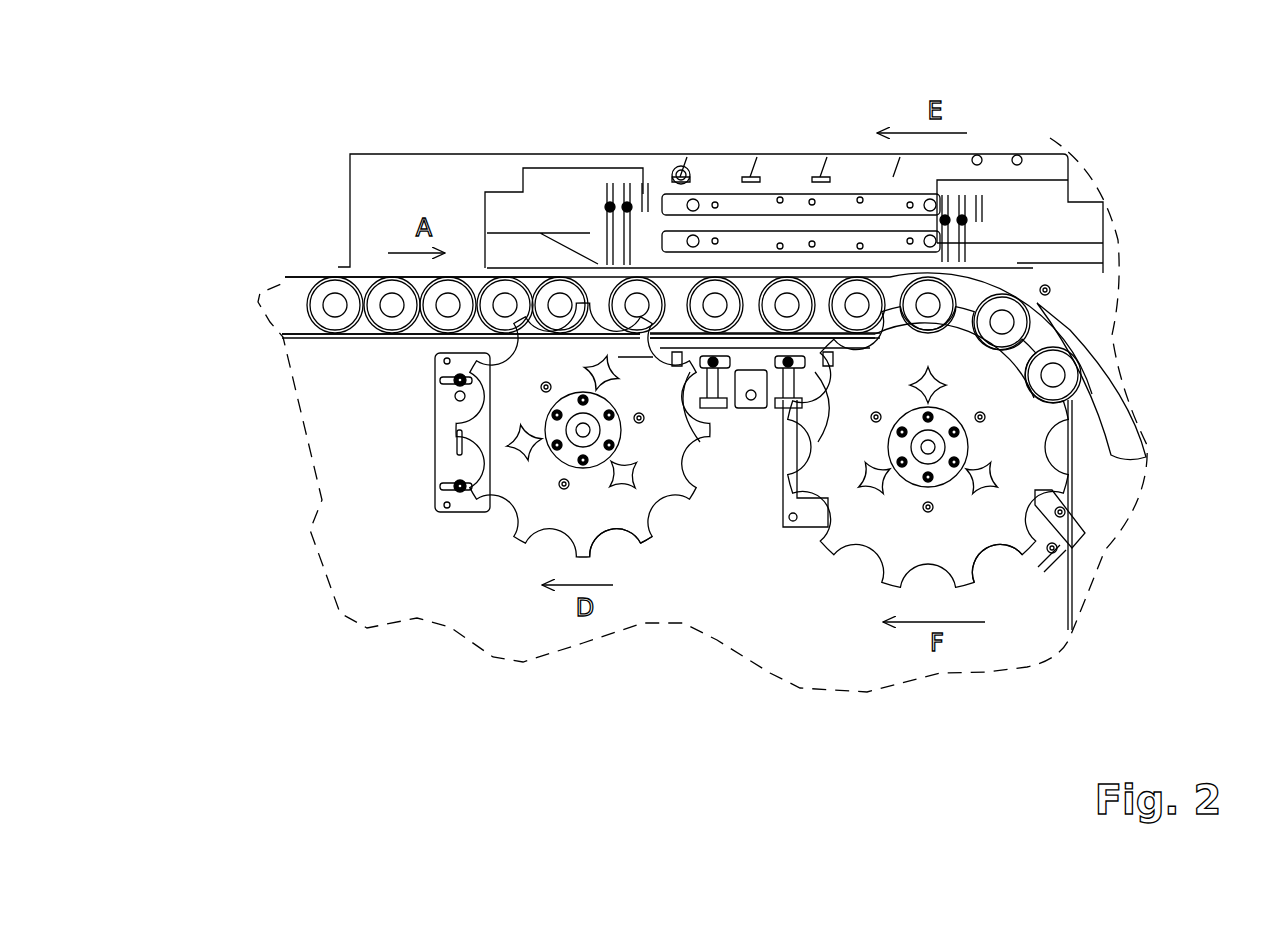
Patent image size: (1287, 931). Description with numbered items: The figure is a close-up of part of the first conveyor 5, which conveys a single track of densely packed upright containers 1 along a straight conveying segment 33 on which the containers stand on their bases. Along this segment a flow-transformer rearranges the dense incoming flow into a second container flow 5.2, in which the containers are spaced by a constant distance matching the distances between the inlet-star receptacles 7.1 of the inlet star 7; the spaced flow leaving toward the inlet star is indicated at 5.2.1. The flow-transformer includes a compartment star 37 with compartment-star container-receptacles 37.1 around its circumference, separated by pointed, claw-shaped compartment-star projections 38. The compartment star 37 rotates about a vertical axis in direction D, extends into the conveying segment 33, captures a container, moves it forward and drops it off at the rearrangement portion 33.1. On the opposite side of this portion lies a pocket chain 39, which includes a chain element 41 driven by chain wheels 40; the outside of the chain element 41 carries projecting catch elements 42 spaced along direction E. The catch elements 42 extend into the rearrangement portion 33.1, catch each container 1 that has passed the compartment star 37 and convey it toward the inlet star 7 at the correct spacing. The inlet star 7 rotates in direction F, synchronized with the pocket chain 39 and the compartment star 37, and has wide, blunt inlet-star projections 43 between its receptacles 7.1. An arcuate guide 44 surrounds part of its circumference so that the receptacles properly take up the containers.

The container 1 is at (333, 290).
The first conveyor 5 is at (413, 113).
The second container flow 5.2 is at (1060, 328).
The chain rail 5.2.1 is at (360, 350).
The inlet star 7 is at (882, 530).
The inlet-star receptacles 7.1 is at (987, 557).
The straight conveying segment 33 is at (280, 318).
The rearrangement portion 33.1 is at (755, 417).
The compartment star 37 is at (540, 498).
The compartment-star container-receptacles 37.1 is at (607, 530).
The compartment-star projection 38 is at (637, 537).
The pocket chain 39 is at (632, 155).
The chain wheels 40 is at (1105, 263).
The chain element 41 is at (722, 190).
The catch elements 42 is at (820, 163).
The inlet-star projections 43 is at (1040, 545).
The arcuate guide 44 is at (1130, 435).